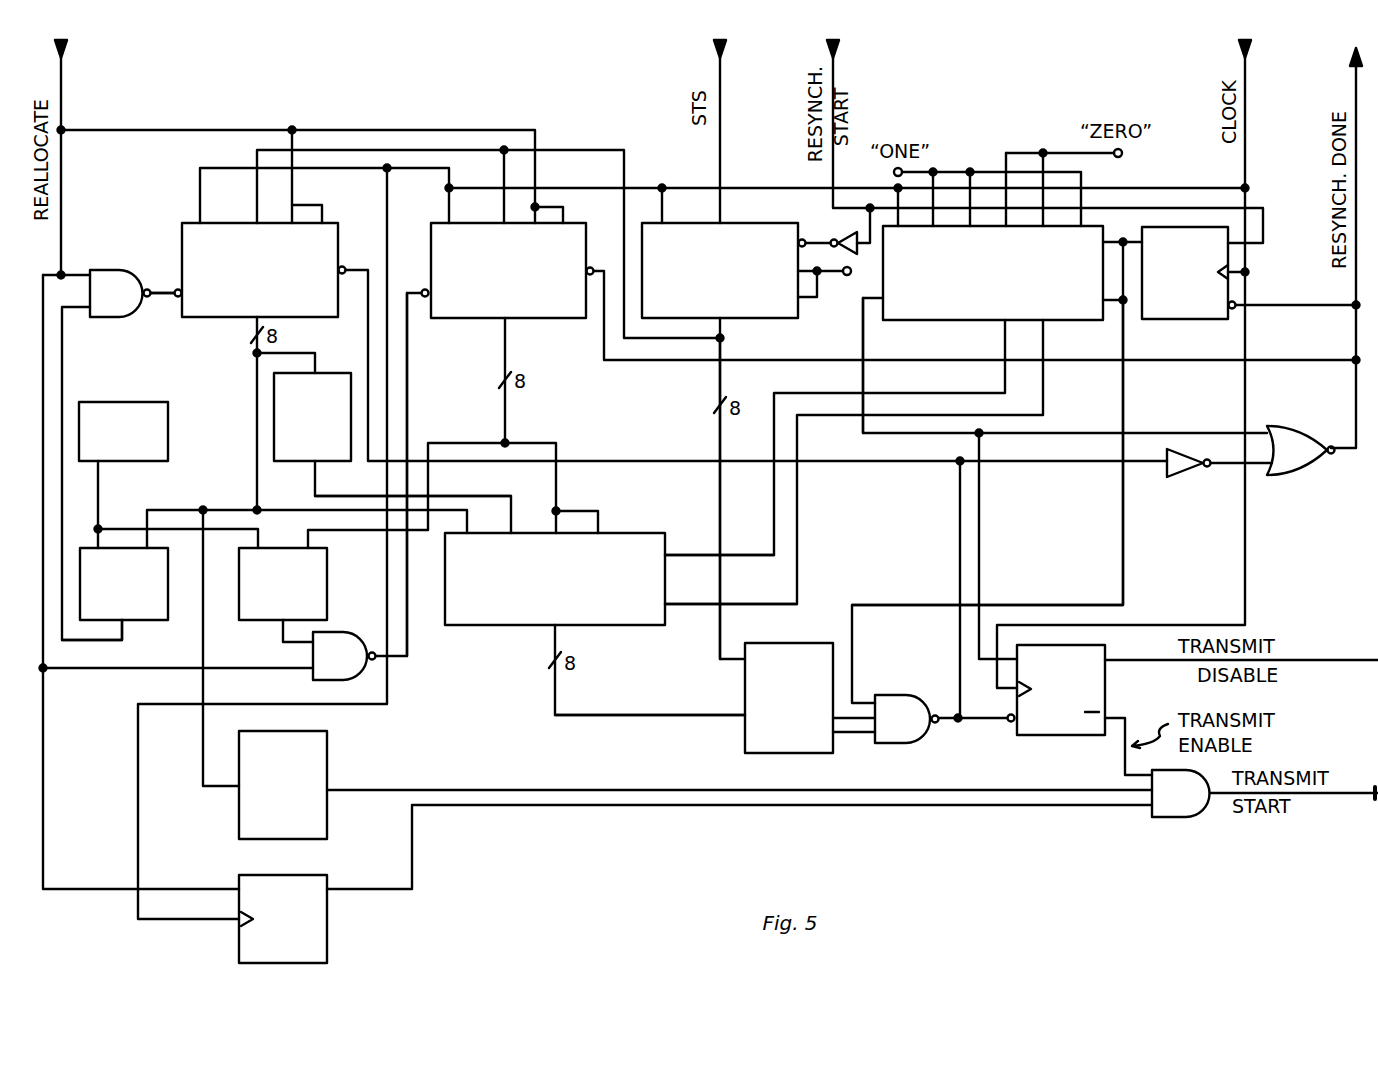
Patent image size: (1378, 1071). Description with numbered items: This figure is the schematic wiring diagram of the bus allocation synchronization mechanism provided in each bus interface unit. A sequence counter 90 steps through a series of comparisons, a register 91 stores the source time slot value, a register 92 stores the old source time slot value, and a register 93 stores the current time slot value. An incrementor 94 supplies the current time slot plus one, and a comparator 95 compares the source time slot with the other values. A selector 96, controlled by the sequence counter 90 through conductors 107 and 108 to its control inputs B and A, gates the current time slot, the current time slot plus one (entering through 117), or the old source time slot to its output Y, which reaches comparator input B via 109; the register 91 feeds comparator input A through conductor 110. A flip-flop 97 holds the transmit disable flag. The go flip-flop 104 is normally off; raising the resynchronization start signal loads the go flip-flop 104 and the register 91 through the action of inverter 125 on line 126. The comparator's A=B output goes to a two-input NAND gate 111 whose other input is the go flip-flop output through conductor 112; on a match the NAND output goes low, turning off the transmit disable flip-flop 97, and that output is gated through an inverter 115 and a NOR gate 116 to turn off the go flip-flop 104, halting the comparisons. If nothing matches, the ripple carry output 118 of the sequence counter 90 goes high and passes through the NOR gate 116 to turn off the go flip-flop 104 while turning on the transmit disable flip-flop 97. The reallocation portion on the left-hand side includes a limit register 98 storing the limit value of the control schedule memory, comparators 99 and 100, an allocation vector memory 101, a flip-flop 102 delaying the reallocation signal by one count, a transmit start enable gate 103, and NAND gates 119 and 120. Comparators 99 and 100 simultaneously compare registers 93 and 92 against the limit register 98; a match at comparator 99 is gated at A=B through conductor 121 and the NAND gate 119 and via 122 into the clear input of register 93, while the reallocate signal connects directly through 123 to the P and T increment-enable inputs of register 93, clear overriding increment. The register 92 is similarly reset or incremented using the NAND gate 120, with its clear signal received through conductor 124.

The sequence counter 90 is at (993, 273).
The source time slot register 91 is at (720, 271).
The old source time slot register 92 is at (508, 271).
The current time slot register 93 is at (260, 271).
The incrementor 94 is at (312, 417).
The comparator 95 is at (789, 698).
The selector 96 is at (555, 579).
The transmit disable flip-flop 97 is at (1061, 690).
The limit register 98 is at (123, 431).
The comparator 99 is at (124, 584).
The comparator 100 is at (283, 584).
The allocation vector memory 101 is at (283, 785).
The flip-flop 102 is at (283, 919).
The transmit start enable gate 103 is at (1180, 793).
The go flip-flop 104 is at (1172, 318).
The conductor 107 is at (698, 549).
The conductor 108 is at (706, 610).
The conductor 109 is at (693, 711).
The conductor 110 is at (752, 498).
The NAND gate 111 is at (907, 719).
The conductor 112 is at (908, 604).
The inverter 115 is at (1180, 472).
The NOR gate 116 is at (1273, 450).
The conductor 117 is at (443, 496).
The ripple carry output 118 is at (893, 365).
The NAND gate 119 is at (120, 293).
The NAND gate 120 is at (344, 656).
The conductor 121 is at (128, 637).
The conductor 122 is at (163, 298).
The conductor 123 is at (298, 188).
The conductor 124 is at (439, 474).
The inverter 125 is at (843, 192).
The line 126 is at (818, 232).